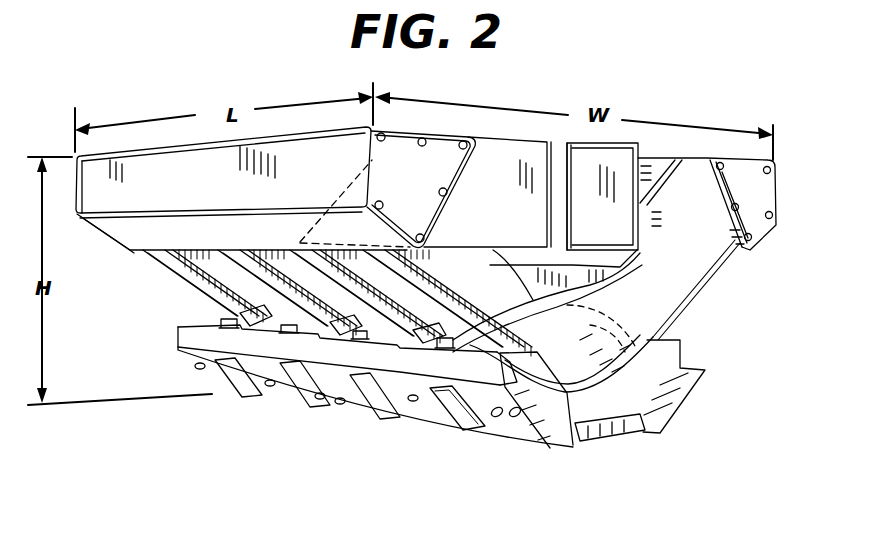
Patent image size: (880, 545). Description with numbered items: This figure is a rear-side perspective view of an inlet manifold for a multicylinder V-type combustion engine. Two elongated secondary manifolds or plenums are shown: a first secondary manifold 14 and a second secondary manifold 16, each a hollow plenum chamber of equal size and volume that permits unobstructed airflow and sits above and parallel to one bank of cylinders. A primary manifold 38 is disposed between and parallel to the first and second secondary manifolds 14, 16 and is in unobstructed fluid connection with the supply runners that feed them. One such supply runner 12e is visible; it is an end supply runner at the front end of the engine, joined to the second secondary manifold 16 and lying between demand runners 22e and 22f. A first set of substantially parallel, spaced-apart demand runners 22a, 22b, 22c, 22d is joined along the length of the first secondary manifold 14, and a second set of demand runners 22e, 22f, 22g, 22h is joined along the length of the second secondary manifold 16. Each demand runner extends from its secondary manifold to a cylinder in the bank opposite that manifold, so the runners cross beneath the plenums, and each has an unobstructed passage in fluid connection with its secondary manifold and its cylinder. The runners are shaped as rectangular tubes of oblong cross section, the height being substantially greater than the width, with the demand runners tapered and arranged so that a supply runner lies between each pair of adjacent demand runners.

The supply runner 12e is at (508, 185).
The first secondary manifold 14 is at (772, 232).
The second secondary manifold 16 is at (128, 204).
The demand runner 22a is at (233, 390).
The demand runner 22b is at (300, 390).
The demand runner 22c is at (377, 400).
The demand runner 22d is at (628, 217).
The demand runner 22e is at (477, 305).
The demand runner 22f is at (395, 382).
The demand runner 22g is at (307, 303).
The demand runner 22h is at (185, 273).
The primary manifold 38 is at (663, 287).